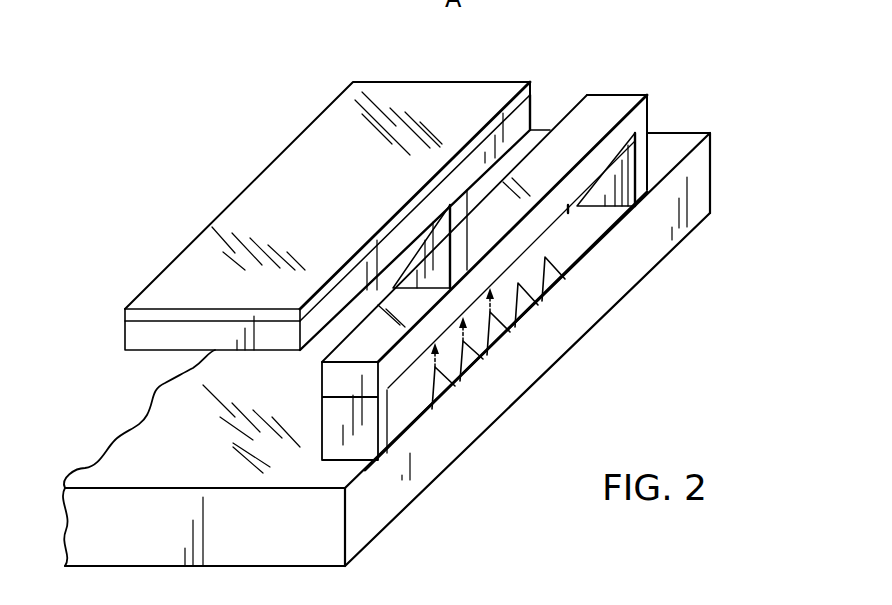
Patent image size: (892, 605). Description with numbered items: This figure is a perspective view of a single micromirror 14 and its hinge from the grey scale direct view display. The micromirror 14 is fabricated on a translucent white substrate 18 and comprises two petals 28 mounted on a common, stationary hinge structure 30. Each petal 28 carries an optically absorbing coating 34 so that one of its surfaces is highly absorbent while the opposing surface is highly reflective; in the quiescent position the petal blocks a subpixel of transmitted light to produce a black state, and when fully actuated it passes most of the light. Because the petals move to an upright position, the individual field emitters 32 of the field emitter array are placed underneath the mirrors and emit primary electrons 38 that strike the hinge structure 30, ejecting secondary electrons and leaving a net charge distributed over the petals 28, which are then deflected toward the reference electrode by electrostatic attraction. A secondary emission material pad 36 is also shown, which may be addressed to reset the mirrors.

The micromirror 14 is at (183, 462).
The translucent white substrate 18 is at (294, 543).
The petal 28 is at (130, 339).
The hinge structure 30 is at (577, 78).
The field emitter 32 is at (528, 294).
The optically absorbing coating 34 is at (183, 271).
The secondary emission material pad 36 is at (568, 207).
The primary electrons 38 is at (496, 302).